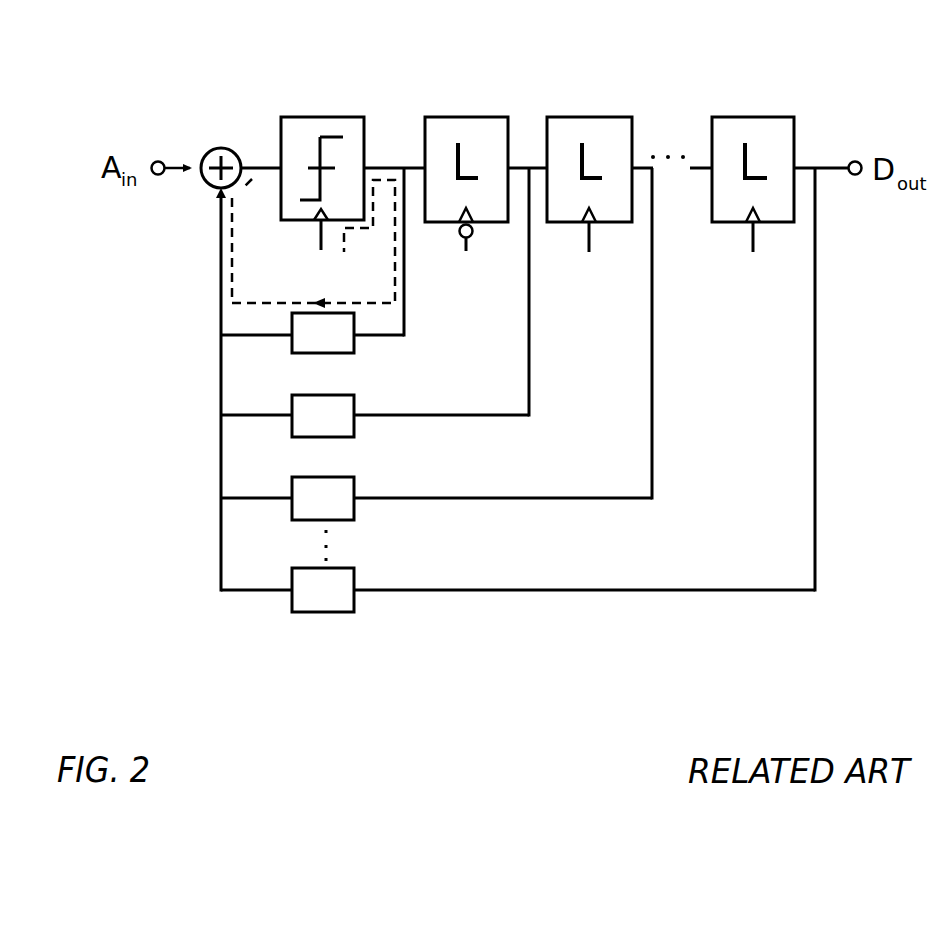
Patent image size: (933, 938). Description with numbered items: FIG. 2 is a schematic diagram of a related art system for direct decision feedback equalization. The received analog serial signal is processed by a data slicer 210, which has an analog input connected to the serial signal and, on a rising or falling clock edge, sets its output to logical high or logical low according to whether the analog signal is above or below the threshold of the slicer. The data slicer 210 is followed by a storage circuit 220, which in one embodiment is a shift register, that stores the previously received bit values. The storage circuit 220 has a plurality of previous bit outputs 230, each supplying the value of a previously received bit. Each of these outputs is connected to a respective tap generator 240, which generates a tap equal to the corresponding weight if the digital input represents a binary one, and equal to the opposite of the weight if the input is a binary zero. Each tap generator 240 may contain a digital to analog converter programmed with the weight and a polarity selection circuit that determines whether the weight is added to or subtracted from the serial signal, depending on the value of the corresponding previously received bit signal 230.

The data slicer 210 is at (327, 117).
The storage circuit 220 is at (790, 82).
The previous bit outputs 230 is at (404, 287).
The tap generator 240 is at (354, 348).